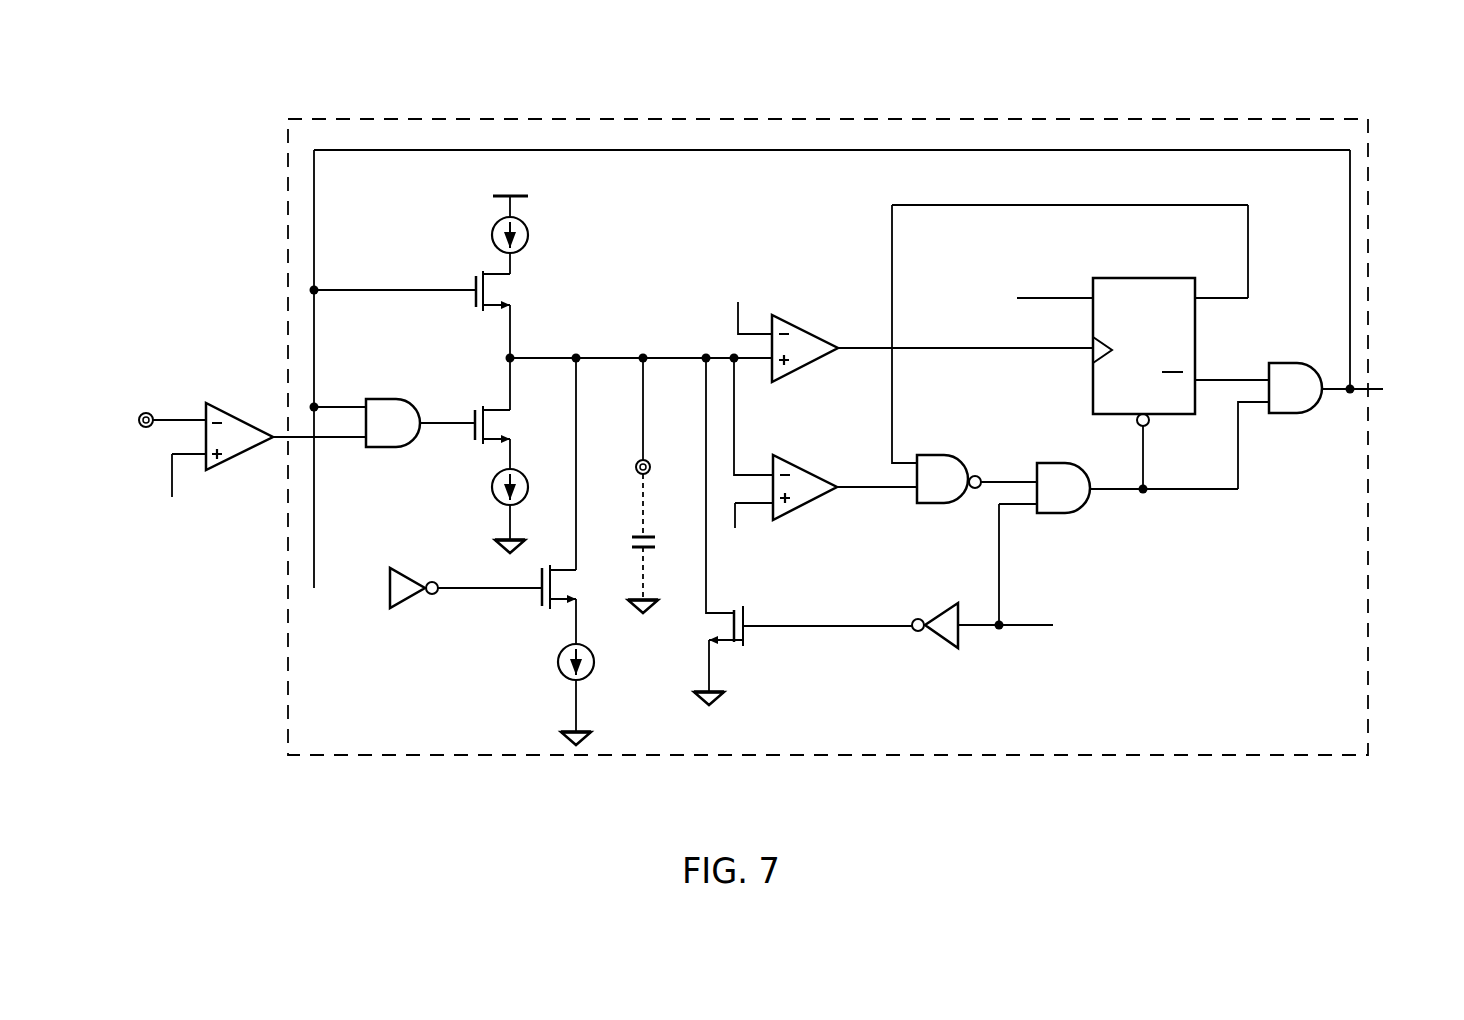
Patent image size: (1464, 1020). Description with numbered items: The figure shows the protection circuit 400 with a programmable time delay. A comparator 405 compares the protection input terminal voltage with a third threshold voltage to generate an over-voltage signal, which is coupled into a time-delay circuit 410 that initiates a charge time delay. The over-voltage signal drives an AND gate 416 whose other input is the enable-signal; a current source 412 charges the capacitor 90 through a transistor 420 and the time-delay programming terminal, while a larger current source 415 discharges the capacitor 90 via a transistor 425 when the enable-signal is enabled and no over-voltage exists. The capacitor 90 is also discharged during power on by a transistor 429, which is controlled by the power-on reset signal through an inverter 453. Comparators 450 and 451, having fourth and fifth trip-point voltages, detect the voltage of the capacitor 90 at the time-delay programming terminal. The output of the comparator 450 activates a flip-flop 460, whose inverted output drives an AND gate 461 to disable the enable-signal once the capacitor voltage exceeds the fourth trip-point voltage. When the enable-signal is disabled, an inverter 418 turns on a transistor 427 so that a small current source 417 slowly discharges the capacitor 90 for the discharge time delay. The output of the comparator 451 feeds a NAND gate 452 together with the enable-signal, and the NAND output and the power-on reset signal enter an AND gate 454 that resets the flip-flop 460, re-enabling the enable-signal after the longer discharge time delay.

The protection circuit 400 is at (1410, 85).
The time-delay circuit 410 is at (1275, 757).
The comparator 405 is at (222, 409).
The AND gate 416 is at (390, 448).
The transistor 420 is at (479, 268).
The current source 412 is at (531, 241).
The transistor 425 is at (478, 402).
The current source 415 is at (497, 503).
The inverter 418 is at (405, 610).
The transistor 427 is at (547, 610).
The current source 417 is at (591, 673).
The capacitor 90 is at (652, 549).
The transistor 429 is at (748, 652).
The comparator 450 is at (794, 318).
The comparator 451 is at (812, 459).
The NAND gate 452 is at (930, 505).
The AND gate 454 is at (1052, 515).
The inverter 453 is at (940, 650).
The flip-flop 460 is at (1148, 278).
The AND gate 461 is at (1288, 415).